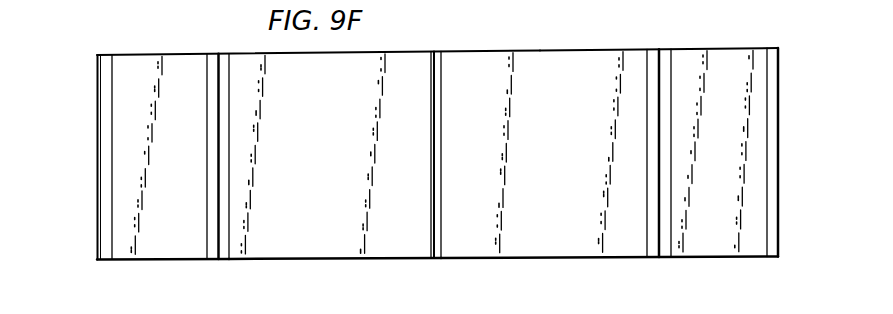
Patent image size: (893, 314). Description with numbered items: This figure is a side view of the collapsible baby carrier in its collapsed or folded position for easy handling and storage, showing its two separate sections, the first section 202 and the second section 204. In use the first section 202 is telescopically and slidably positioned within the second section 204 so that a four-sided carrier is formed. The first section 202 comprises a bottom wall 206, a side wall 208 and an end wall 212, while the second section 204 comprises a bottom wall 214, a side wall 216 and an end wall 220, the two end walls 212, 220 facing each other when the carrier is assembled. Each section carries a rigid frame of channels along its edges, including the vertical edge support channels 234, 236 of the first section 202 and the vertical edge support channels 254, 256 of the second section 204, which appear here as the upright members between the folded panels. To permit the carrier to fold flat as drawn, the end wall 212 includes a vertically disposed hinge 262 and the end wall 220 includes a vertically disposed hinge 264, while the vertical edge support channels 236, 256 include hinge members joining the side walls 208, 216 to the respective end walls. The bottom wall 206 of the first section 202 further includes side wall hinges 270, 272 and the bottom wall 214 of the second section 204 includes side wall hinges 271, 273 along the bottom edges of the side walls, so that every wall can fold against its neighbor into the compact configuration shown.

The first section 202 is at (339, 135).
The second section 204 is at (578, 172).
The bottom wall 206 is at (268, 242).
The side wall 208 is at (322, 222).
The end wall 212 is at (150, 182).
The bottom wall 214 is at (595, 257).
The side wall 216 is at (485, 213).
The end wall 220 is at (735, 238).
The vertical edge support channel 234 is at (431, 135).
The vertical edge support channel 236 is at (218, 173).
The vertical edge support channel 254 is at (467, 129).
The vertical edge support channel 256 is at (662, 211).
The vertically disposed hinge 262 is at (100, 163).
The vertically disposed hinge 264 is at (797, 150).
The side wall hinge 270 is at (420, 259).
The side wall hinge 271 is at (611, 257).
The side wall hinge 272 is at (497, 51).
The side wall hinge 273 is at (573, 51).